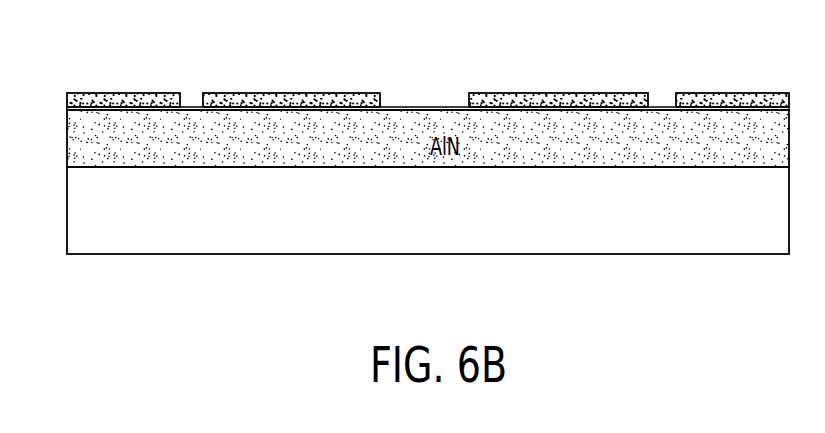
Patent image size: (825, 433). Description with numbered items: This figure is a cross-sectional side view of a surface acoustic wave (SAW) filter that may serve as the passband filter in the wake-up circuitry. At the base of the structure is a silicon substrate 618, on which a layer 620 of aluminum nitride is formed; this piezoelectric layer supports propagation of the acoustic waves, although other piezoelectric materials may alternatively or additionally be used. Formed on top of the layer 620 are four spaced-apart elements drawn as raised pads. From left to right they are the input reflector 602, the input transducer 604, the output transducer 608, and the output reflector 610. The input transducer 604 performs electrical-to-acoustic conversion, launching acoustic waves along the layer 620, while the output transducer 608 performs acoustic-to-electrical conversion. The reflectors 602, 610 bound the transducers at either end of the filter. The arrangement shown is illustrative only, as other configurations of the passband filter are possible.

The input reflector 602 is at (132, 92).
The input transducer 604 is at (298, 92).
The output transducer 608 is at (558, 92).
The output reflector 610 is at (732, 92).
The layer of aluminum nitride 620 is at (430, 118).
The silicon substrate 618 is at (158, 245).